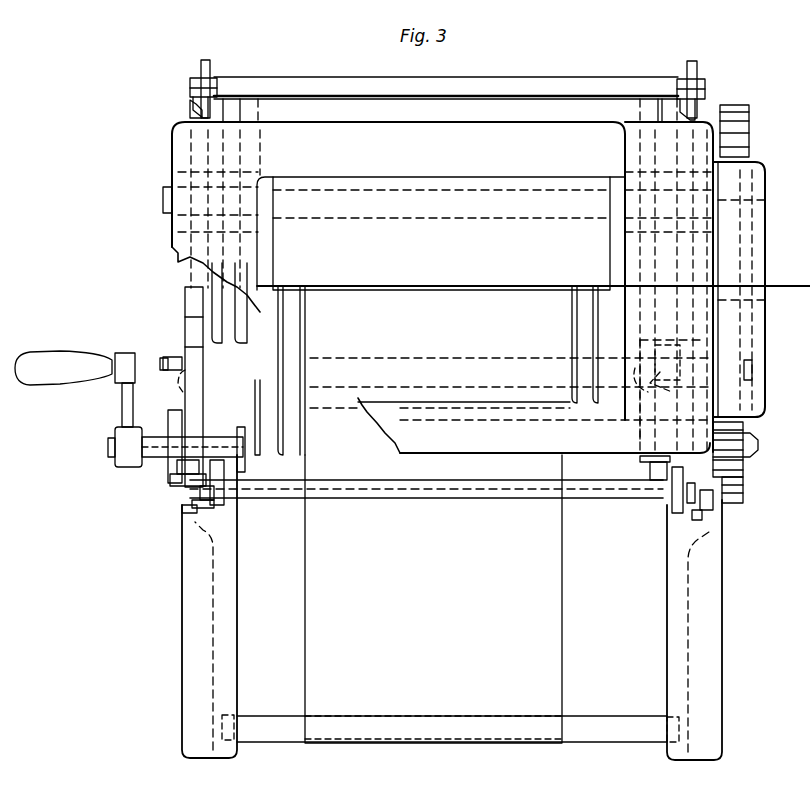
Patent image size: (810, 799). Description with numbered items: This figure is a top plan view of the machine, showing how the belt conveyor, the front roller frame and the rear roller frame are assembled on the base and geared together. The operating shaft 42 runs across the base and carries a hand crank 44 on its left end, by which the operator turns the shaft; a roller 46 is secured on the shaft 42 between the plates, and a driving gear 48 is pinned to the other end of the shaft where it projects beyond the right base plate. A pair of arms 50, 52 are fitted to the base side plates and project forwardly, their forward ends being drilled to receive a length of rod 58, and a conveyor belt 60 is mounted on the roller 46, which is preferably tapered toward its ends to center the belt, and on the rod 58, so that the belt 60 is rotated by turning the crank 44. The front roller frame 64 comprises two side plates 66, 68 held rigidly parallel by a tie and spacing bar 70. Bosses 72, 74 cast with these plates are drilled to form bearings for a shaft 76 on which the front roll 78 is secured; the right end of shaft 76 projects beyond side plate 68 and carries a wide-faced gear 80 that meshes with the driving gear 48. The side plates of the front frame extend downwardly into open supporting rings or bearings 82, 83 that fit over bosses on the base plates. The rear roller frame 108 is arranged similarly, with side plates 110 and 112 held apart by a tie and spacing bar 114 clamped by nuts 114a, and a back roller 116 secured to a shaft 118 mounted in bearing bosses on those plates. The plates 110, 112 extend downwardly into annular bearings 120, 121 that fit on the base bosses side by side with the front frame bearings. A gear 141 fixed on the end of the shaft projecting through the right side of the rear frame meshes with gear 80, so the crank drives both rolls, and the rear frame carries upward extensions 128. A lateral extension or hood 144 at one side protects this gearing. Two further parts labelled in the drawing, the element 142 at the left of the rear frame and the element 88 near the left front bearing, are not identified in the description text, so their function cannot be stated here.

The rear roller frame 108 is at (320, 79).
The tie and spacing bar 114 is at (516, 88).
The nuts 114a is at (198, 75).
The side plate 110 is at (196, 118).
The housing 142 is at (172, 150).
The shaft 118 is at (163, 200).
The upward extensions 128 is at (178, 266).
The bearing plate 88 is at (185, 300).
The back roller 116 is at (310, 235).
The side plate 112 is at (692, 122).
The gear 141 is at (741, 131).
The lateral extension or hood 144 is at (745, 171).
The side plate 68 is at (682, 392).
The front roll 78 is at (332, 438).
The roller 46 is at (258, 467).
The side plate 66 is at (197, 423).
The tie and spacing bar 70 is at (597, 496).
The conveyor belt 60 is at (320, 609).
The rod 58 is at (612, 732).
The arm 50 is at (190, 718).
The arm 52 is at (708, 699).
The hand crank 44 is at (122, 405).
The annular bearing 120 is at (187, 425).
The operating shaft 42 is at (158, 455).
The boss 72 is at (180, 350).
The shaft 76 is at (160, 362).
The bearing 82 is at (163, 463).
The front roller frame 64 is at (230, 505).
The boss 74 is at (667, 356).
The bearing 83 is at (653, 467).
The annular bearing 121 is at (667, 480).
The wide-faced gear 80 is at (727, 447).
The driving gear 48 is at (738, 504).